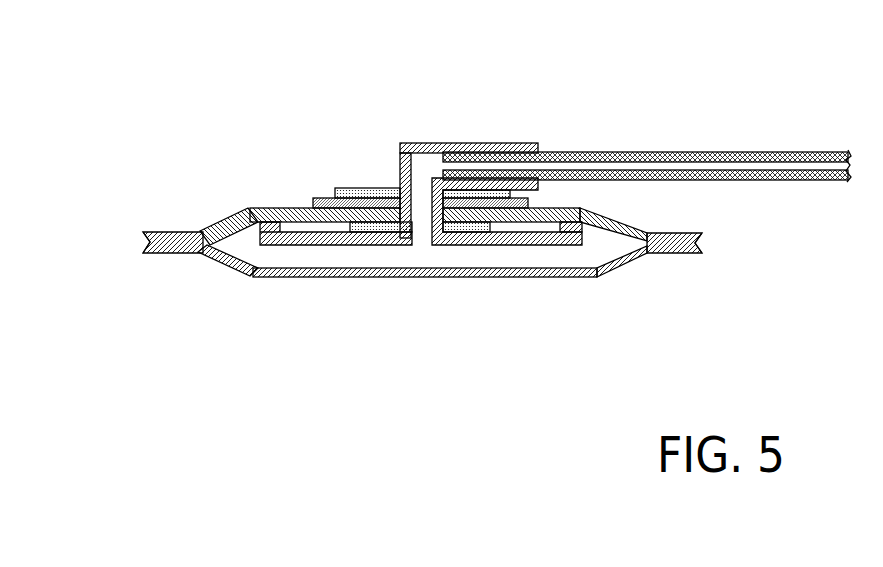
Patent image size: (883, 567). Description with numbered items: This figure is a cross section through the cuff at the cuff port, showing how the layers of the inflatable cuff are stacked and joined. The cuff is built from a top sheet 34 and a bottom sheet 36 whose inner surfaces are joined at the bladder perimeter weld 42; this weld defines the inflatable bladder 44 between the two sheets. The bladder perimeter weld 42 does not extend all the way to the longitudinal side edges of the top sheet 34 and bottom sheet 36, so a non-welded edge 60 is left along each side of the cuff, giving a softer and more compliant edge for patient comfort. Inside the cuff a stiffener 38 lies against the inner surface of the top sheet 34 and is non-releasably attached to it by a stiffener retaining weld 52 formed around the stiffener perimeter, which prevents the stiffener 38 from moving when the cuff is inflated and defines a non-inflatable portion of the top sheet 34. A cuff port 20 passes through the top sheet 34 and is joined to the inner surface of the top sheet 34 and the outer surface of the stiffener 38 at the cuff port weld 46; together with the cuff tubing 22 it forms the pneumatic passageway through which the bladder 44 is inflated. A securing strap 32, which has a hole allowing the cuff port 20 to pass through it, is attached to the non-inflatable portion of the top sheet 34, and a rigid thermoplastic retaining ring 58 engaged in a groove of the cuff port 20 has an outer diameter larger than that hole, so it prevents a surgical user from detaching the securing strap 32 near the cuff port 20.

The cuff port 20 is at (440, 143).
The cuff tubing 22 is at (595, 150).
The securing strap 32 is at (313, 202).
The top sheet 34 is at (212, 230).
The bottom sheet 36 is at (282, 277).
The stiffener 38 is at (232, 252).
The bladder perimeter weld 42 is at (182, 253).
The inflatable bladder 44 is at (388, 260).
The cuff port weld 46 is at (362, 190).
The stiffener retaining weld 52 is at (243, 218).
The retaining ring 58 is at (391, 195).
The non-welded edge 60 is at (148, 233).